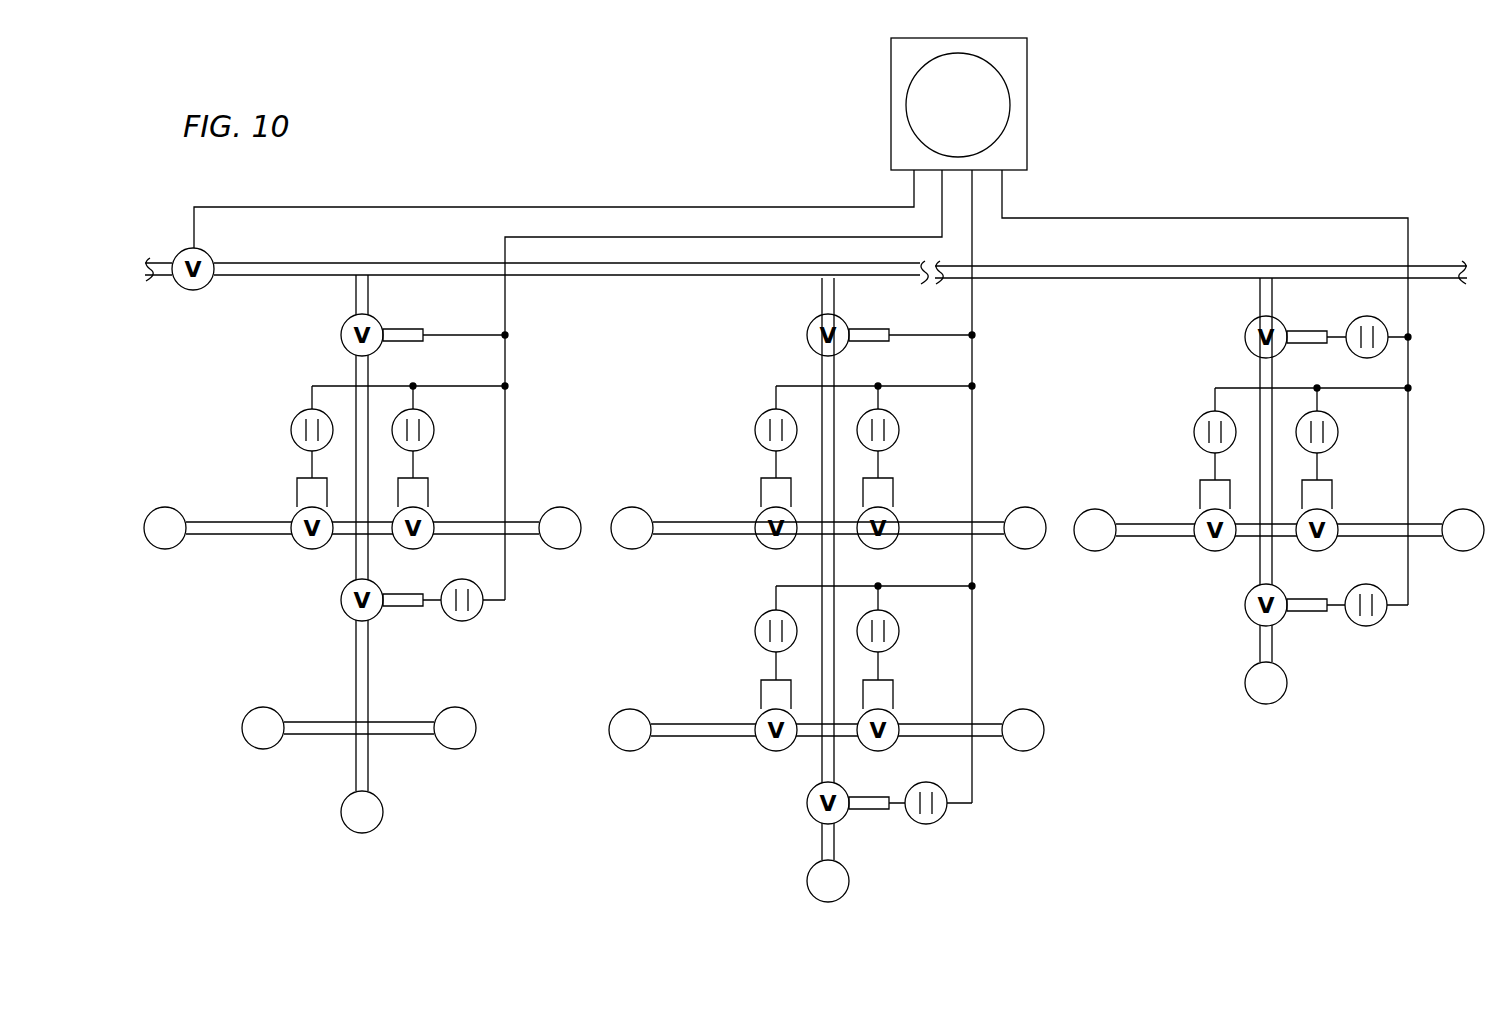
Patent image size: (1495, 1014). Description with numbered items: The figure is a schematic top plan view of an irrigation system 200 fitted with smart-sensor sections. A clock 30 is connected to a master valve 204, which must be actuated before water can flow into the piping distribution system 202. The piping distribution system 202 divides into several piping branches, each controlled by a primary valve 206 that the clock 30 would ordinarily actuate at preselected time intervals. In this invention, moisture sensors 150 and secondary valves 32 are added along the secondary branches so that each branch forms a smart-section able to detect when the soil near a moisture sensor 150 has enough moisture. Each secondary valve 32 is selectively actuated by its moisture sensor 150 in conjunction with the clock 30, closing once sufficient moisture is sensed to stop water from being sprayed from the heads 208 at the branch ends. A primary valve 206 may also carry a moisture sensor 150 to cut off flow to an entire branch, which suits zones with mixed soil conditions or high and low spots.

The clock 30 is at (1027, 90).
The irrigation system 200 is at (332, 263).
The piping distribution system 202 is at (393, 263).
The master valve 204 is at (187, 290).
The primary valve 206 is at (342, 335).
The moisture sensor 150 is at (292, 432).
The secondary valve 32 is at (305, 546).
The outlet 208 is at (172, 512).